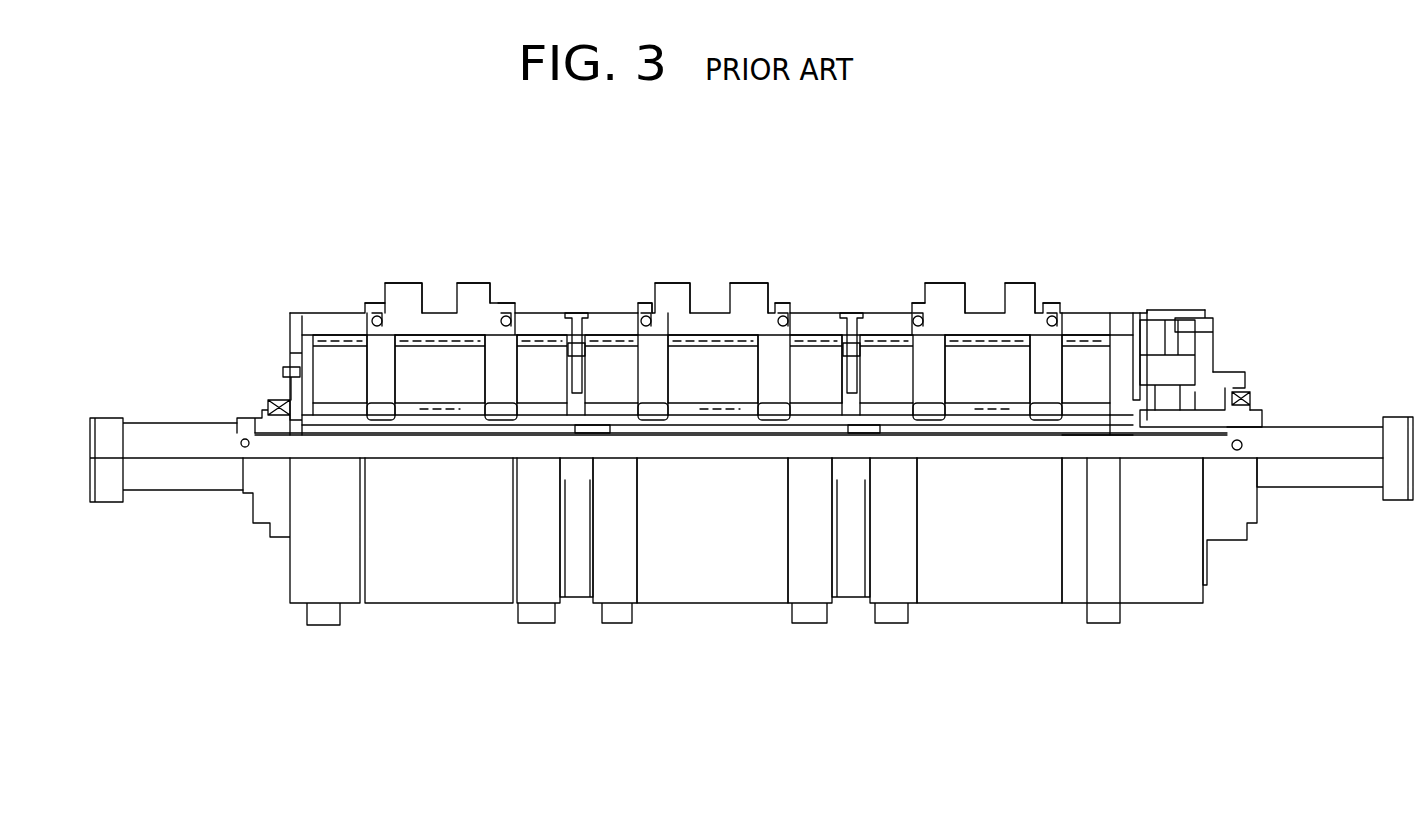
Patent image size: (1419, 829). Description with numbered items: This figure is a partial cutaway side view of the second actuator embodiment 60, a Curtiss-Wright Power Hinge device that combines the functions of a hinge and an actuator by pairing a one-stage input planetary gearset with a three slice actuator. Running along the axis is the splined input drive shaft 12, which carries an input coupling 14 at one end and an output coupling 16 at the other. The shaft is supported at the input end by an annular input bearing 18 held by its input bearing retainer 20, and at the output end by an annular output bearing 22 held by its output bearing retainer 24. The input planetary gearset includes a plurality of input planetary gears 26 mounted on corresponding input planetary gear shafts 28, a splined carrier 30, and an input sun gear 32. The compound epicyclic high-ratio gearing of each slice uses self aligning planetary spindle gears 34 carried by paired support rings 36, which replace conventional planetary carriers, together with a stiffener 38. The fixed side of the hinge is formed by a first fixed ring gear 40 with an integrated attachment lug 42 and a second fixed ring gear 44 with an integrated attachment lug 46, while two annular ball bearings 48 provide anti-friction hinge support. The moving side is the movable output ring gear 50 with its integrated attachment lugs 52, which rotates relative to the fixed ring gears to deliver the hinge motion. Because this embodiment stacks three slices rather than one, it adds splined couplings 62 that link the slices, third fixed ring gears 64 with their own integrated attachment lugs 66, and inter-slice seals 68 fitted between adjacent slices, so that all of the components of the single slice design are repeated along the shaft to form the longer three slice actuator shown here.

The splined input drive shaft 12 is at (1175, 447).
The input coupling 14 is at (1313, 442).
The output coupling 16 is at (178, 447).
The annular input bearing 18 is at (1250, 398).
The input bearing retainer 20 is at (1212, 388).
The annular output bearing 22 is at (272, 398).
The output bearing retainer 24 is at (288, 392).
The input planetary gears 26 is at (1172, 312).
The input planetary gear shafts 28 is at (1175, 342).
The splined carrier 30 is at (1135, 440).
The input sun gear 32 is at (432, 433).
The spindle gears 34 is at (432, 362).
The support rings 36 is at (383, 420).
The stiffener 38 is at (576, 318).
The first fixed ring gear 40 is at (1102, 318).
The attachment lug 42 is at (1102, 613).
The second fixed ring gear 44 is at (323, 320).
The attachment lug 46 is at (323, 613).
The annular ball bearings 48 is at (377, 316).
The movable output ring gear 50 is at (440, 592).
The attachment lugs 52 is at (397, 290).
The second actuator embodiment 60 is at (1045, 160).
The splined couplings 62 is at (600, 440).
The third fixed ring gears 64 is at (535, 318).
The attachment lugs 66 is at (536, 613).
The inter-slice seals 68 is at (577, 590).